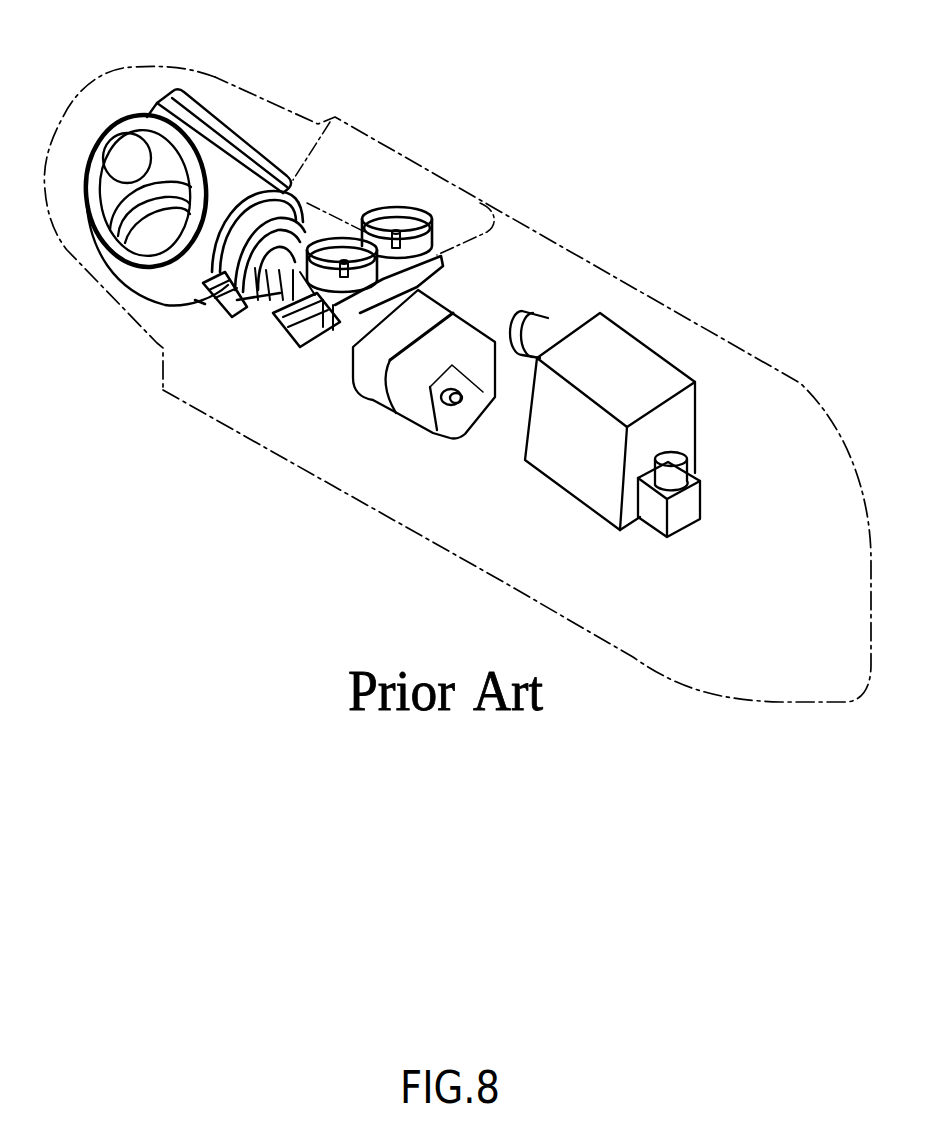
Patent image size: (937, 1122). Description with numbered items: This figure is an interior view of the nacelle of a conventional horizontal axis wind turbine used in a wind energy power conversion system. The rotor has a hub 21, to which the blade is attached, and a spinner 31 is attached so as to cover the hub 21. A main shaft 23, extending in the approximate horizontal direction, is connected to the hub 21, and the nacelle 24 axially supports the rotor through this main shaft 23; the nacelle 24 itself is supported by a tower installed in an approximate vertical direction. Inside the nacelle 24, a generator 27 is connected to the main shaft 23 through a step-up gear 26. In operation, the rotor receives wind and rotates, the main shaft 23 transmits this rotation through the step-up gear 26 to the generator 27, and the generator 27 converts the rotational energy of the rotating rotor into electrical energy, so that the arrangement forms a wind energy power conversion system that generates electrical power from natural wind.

The hub 21 is at (160, 110).
The main shaft 23 is at (283, 300).
The nacelle 24 is at (768, 360).
The step-up gear 26 is at (466, 336).
The generator 27 is at (637, 370).
The spinner 31 is at (66, 112).